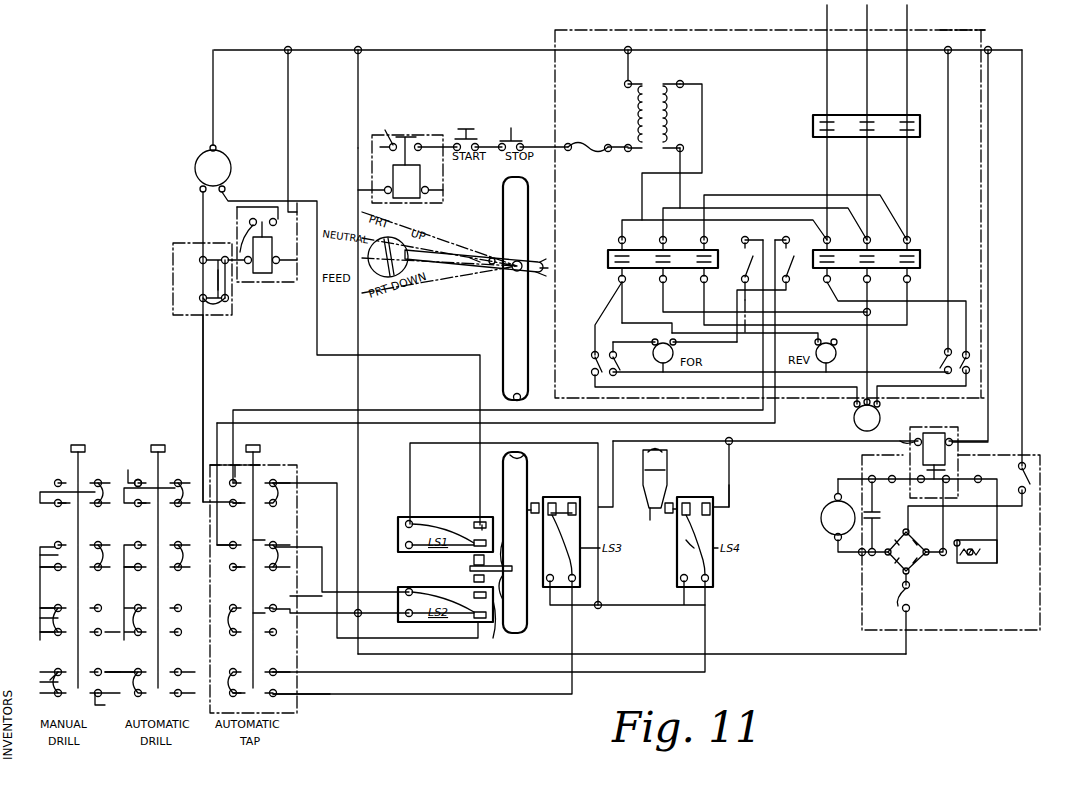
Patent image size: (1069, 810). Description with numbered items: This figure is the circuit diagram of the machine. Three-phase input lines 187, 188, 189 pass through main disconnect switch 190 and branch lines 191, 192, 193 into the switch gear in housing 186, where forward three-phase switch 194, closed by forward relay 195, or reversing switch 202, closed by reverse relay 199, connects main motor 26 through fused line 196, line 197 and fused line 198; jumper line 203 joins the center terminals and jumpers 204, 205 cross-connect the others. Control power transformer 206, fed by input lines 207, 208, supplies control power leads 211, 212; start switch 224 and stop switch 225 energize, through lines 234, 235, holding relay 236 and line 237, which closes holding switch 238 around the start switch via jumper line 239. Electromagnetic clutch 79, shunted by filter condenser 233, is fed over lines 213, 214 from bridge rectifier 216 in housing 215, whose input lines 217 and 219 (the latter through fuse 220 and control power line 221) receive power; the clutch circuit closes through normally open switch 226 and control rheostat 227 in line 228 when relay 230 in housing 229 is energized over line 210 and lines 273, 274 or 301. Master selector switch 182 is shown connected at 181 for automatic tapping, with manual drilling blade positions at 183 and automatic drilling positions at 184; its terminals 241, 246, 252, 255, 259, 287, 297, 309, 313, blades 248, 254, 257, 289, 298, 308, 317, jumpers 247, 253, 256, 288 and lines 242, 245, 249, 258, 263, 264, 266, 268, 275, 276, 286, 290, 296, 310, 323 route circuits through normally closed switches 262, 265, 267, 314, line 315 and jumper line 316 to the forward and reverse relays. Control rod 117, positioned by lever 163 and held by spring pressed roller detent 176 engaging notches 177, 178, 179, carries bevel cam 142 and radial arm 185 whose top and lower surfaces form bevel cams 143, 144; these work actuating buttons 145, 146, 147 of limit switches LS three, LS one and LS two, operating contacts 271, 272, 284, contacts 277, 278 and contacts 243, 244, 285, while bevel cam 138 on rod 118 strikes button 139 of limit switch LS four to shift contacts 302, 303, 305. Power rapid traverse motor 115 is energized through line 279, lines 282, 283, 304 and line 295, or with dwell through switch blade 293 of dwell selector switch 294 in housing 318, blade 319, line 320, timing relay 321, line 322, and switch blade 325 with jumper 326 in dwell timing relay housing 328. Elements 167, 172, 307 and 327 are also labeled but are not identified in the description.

The main motor 26 is at (878, 422).
The electromagnetic clutch 79 is at (832, 530).
The power rapid traverse motor 115 is at (197, 172).
The control rod 117 is at (503, 326).
The rod 118 is at (666, 446).
The bevel cam 138 is at (652, 510).
The actuating button 139 is at (676, 528).
The double faced bevel cam 142 is at (528, 514).
The bevel cam 143 is at (503, 542).
The bevel cam 144 is at (503, 580).
The actuating button 145 is at (550, 502).
The actuating button 146 is at (474, 562).
The actuating button 147 is at (474, 580).
The control lever 163 is at (420, 250).
The lever arm 167 is at (466, 256).
The pivot pin 172 is at (492, 252).
The spring pressed roller detent 176 is at (546, 266).
The notch 177 is at (543, 274).
The notch 178 is at (541, 262).
The notch 179 is at (525, 262).
The connected position of master selector switch 181 is at (266, 452).
The master selector switch 182 is at (296, 700).
The manual drilling switch blade positions 183 is at (78, 444).
The automatic drilling switch blade positions 184 is at (158, 444).
The radial arm 185 is at (468, 572).
The housing 186 is at (975, 40).
The three phase input line 187 is at (822, 97).
The three phase input line 188 is at (866, 97).
The three phase input line 189 is at (907, 97).
The main three phase disconnect switch 190 is at (813, 128).
The branch line 191 is at (762, 220).
The branch line 192 is at (766, 208).
The branch line 193 is at (762, 195).
The three phase switch 194 is at (608, 240).
The forward relay 195 is at (617, 366).
The fused line 196 is at (597, 328).
The line 197 is at (870, 348).
The fused line 198 is at (981, 342).
The reverse relay 199 is at (840, 345).
The three phase switch 202 is at (918, 246).
The jumper line 203 is at (624, 296).
The jumper 204 is at (640, 325).
The jumper 205 is at (664, 296).
The control power transformer 206 is at (658, 83).
The transformer input line 207 is at (708, 152).
The transformer input line 208 is at (688, 188).
The line 210 is at (993, 245).
The control power lead 211 is at (410, 52).
The control power lead 212 is at (560, 146).
The line 213 is at (854, 480).
The line 214 is at (850, 554).
The housing 215 is at (950, 618).
The bridge rectifier 216 is at (923, 576).
The rectifier input line 217 is at (958, 540).
The rectifier input line 219 is at (902, 585).
The fuse 220 is at (903, 608).
The control power line 221 is at (359, 410).
The start switch 224 is at (476, 140).
The stop switch 225 is at (511, 128).
The switch 226 is at (950, 480).
The control rheostat 227 is at (952, 538).
The line 228 is at (996, 546).
The housing 229 is at (938, 428).
The relay 230 is at (908, 438).
The filter condenser 233 is at (880, 516).
The line 234 is at (437, 145).
The line 235 is at (425, 176).
The holding relay 236 is at (429, 192).
The line 237 is at (372, 150).
The holding switch 238 is at (392, 130).
The jumper line 239 is at (417, 138).
The cross terminal 241 is at (362, 608).
The line 242 is at (310, 586).
The contact 243 is at (470, 610).
The contact 244 is at (498, 640).
The line 245 is at (374, 585).
The terminal 246 is at (300, 540).
The jumper 247 is at (140, 573).
The selector switch blade 248 is at (50, 550).
The line 249 is at (296, 570).
The terminal 252 is at (79, 660).
The jumper 253 is at (39, 677).
The selector switch blade 254 is at (144, 698).
The terminal 255 is at (36, 597).
The jumper 256 is at (36, 615).
The switch blade 257 is at (36, 637).
The line 258 is at (233, 410).
The terminal 259 is at (796, 238).
The normally closed switch 262 is at (787, 286).
The line 263 is at (725, 340).
The line 264 is at (640, 345).
The normally closed switch 265 is at (595, 386).
The line 266 is at (716, 372).
The normally closed switch 267 is at (946, 350).
The line 268 is at (948, 172).
The movable contact 271 is at (562, 526).
The contact 272 is at (572, 502).
The line 273 is at (853, 442).
The line 274 is at (660, 436).
The line 275 is at (396, 698).
The line 276 is at (370, 618).
The contact 277 is at (474, 530).
The contact 278 is at (478, 520).
The line 279 is at (358, 370).
The line 282 is at (412, 470).
The line 283 is at (578, 616).
The contact 284 is at (552, 503).
The contact 285 is at (474, 618).
The line 286 is at (438, 630).
The selector switch terminal 287 is at (100, 480).
The jumper 288 is at (141, 514).
The selector switch blade 289 is at (147, 514).
The line 290 is at (203, 332).
The switch blade 293 is at (200, 262).
The dwell selector switch 294 is at (216, 280).
The line 295 is at (203, 208).
The line 296 is at (620, 664).
The terminal 297 is at (284, 672).
The selector switch blade 298 is at (113, 683).
The line 301 is at (729, 460).
The contact 302 is at (730, 488).
The movable contact 303 is at (698, 512).
The line 304 is at (640, 608).
The contact 305 is at (685, 502).
The switch contact 307 is at (256, 612).
The selector switch blade 308 is at (272, 466).
The terminal 309 is at (130, 466).
The line 310 is at (318, 404).
The terminal 313 is at (745, 236).
The normally closed switch 314 is at (744, 284).
The line 315 is at (745, 300).
The jumper line 316 is at (718, 328).
The selector switch blade 317 is at (258, 540).
The housing 318 is at (198, 300).
The dwell selector switch blade 319 is at (229, 300).
The line 320 is at (262, 274).
The timing relay 321 is at (278, 264).
The line 322 is at (291, 160).
The line 323 is at (232, 535).
The switch blade 325 is at (249, 222).
The jumper 326 is at (248, 244).
The conductor 327 is at (228, 200).
The dwell timing relay housing 328 is at (297, 208).